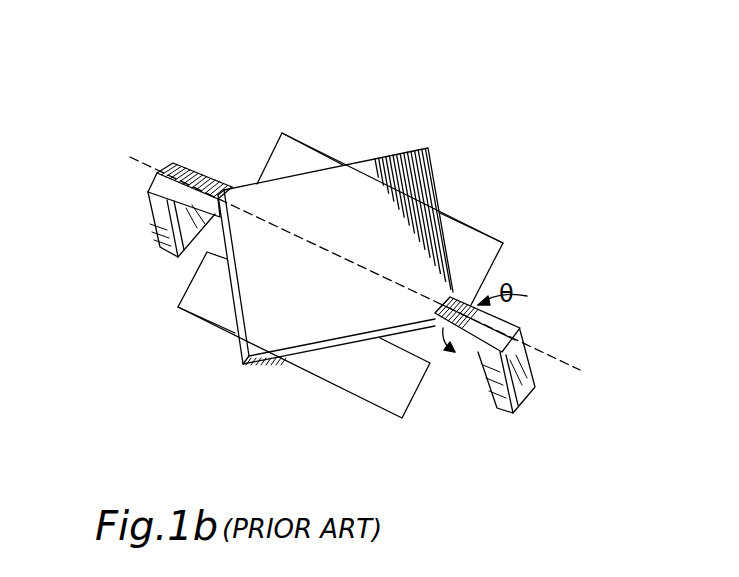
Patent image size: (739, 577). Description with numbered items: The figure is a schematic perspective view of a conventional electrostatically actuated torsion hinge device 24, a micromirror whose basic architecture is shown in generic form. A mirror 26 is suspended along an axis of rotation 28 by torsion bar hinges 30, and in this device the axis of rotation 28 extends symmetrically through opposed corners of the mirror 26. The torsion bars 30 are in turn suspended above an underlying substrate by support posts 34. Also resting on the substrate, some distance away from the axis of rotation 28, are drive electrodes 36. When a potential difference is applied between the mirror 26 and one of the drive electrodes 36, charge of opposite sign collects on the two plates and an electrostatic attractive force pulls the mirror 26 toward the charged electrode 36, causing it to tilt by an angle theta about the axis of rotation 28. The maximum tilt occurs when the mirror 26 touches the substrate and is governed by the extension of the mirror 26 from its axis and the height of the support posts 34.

The electrostatically actuated torsion hinge device 24 is at (381, 236).
The mirror 26 is at (437, 189).
The axis of rotation 28 is at (550, 358).
The torsion bar hinges 30 is at (183, 178).
The support posts 34 is at (160, 257).
The drive electrodes 36 is at (496, 243).